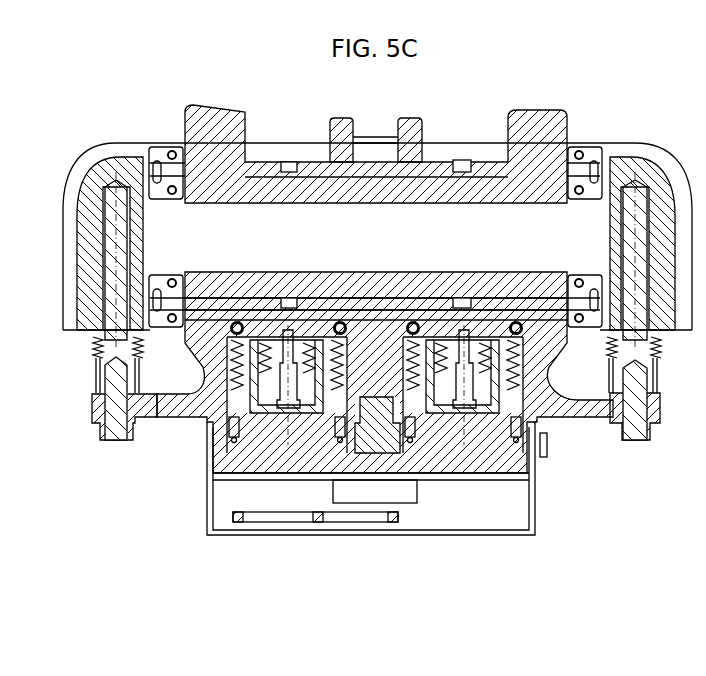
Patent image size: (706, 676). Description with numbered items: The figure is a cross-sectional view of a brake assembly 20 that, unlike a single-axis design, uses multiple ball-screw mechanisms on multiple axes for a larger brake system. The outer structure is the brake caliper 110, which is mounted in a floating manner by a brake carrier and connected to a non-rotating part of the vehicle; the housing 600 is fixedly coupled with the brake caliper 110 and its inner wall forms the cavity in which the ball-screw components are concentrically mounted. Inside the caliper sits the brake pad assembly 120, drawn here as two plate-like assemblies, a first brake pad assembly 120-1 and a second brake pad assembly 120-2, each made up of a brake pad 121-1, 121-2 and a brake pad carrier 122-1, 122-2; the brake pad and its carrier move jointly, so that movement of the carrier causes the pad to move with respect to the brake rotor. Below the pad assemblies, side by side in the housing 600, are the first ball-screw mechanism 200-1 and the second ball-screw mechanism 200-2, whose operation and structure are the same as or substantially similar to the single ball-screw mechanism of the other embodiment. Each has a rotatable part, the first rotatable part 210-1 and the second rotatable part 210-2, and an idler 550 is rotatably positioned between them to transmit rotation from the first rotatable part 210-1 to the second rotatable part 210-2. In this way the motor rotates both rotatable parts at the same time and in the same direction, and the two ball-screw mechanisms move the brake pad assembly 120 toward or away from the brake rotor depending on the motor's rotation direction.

The brake assembly 20 is at (137, 97).
The brake caliper 110 is at (85, 250).
The brake pad assembly 120 is at (375, 216).
The first brake pad assembly 120-1 is at (508, 237).
The second brake pad assembly 120-2 is at (285, 250).
The brake pad 121-1 is at (543, 287).
The brake pad carrier 122-1 is at (443, 302).
The brake pad 121-2 is at (230, 193).
The brake pad carrier 122-2 is at (328, 180).
The first ball-screw mechanism 200-1 is at (219, 401).
The second ball-screw mechanism 200-2 is at (535, 397).
The first rotatable part 210-1 is at (242, 443).
The second rotatable part 210-2 is at (420, 443).
The idler 550 is at (380, 437).
The housing 600 is at (570, 405).